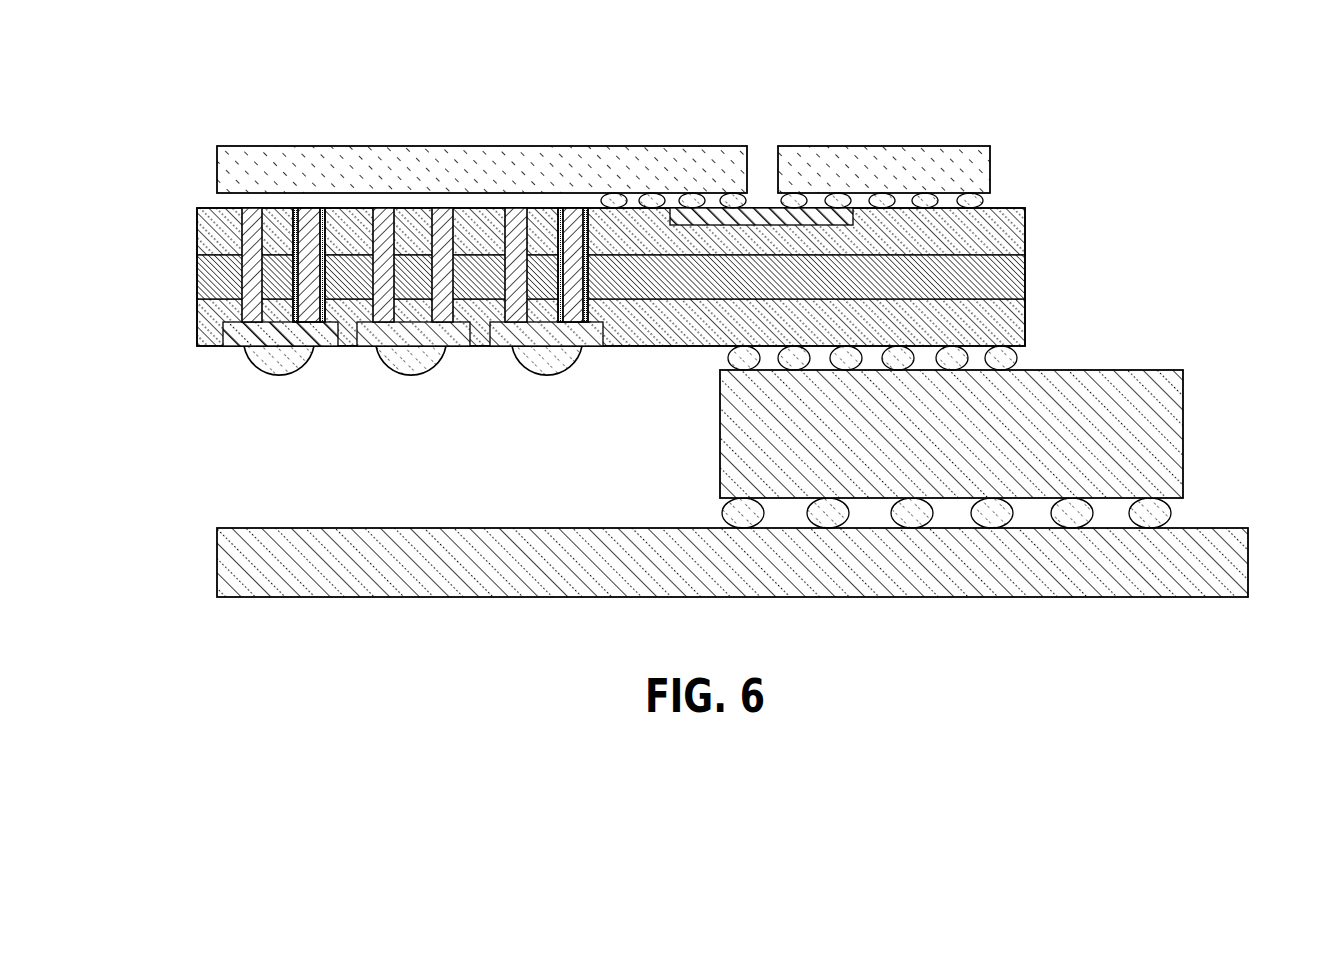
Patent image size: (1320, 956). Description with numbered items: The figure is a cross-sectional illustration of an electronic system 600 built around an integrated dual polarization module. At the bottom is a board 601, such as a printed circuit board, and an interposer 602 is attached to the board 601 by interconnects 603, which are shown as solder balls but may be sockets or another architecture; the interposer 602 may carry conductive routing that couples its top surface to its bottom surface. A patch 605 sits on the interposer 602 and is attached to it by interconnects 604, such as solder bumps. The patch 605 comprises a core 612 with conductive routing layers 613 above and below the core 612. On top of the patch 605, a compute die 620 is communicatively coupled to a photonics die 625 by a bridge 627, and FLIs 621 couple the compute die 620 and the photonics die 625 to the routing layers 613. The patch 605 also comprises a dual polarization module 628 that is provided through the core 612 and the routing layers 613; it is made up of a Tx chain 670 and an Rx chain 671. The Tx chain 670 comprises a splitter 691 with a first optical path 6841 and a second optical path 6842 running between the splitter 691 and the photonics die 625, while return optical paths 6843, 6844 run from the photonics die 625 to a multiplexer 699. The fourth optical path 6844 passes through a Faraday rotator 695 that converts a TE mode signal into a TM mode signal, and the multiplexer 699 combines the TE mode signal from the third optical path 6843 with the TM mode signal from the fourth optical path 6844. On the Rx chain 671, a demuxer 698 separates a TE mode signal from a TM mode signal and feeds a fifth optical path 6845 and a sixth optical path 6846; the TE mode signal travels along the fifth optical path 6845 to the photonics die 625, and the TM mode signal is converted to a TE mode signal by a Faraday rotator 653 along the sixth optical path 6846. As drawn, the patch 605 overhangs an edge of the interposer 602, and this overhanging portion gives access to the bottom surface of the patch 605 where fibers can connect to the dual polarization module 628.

The electronic system 600 is at (1142, 66).
The board 601 is at (1196, 585).
The interposer 602 is at (1170, 450).
The interconnects 603 is at (1165, 516).
The interconnects 604 is at (1028, 394).
The patch 605 is at (1049, 163).
The core 612 is at (1025, 272).
The conductive routing layers 613 is at (1025, 225).
The compute die 620 is at (905, 160).
The FLIs 621 is at (968, 195).
The photonics die 625 is at (693, 160).
The bridge 627 is at (759, 212).
The dual polarization module 628 is at (616, 277).
The Faraday rotator 653 is at (332, 271).
The Tx chain 670 is at (600, 387).
The Rx chain 671 is at (340, 387).
The first optical path 6841 is at (391, 203).
The second optical path 6842 is at (453, 216).
The third optical path 6843 is at (523, 216).
The fourth optical path 6844 is at (587, 214).
The fifth optical path 6845 is at (213, 197).
The sixth optical path 6846 is at (285, 198).
The splitter 691 is at (458, 347).
The Faraday rotator 695 is at (599, 277).
The demuxer 698 is at (232, 348).
The multiplexer 699 is at (594, 348).